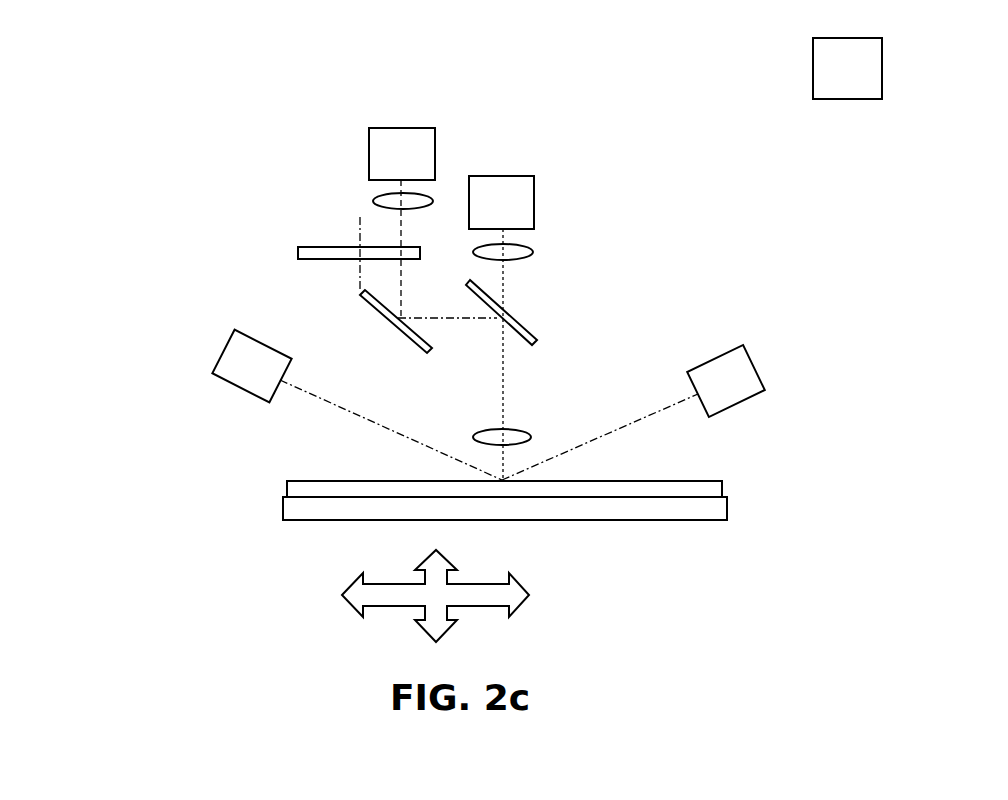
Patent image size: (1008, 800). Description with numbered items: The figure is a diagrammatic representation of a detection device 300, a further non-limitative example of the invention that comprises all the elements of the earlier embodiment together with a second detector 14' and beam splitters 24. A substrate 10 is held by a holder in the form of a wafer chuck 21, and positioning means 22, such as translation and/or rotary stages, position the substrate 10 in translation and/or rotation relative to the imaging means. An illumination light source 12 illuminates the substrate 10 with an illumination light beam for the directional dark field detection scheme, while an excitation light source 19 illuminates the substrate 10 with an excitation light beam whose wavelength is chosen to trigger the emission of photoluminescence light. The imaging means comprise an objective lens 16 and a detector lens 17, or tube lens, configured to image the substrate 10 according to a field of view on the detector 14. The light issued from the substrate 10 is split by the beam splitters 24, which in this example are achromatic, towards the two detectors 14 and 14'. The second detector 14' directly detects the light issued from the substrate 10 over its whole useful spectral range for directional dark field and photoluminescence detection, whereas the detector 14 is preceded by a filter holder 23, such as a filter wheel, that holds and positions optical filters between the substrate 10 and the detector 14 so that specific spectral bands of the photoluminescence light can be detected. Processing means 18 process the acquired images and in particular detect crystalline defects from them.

The device 300 is at (80, 118).
The detector 14 is at (402, 195).
The second detector 14' is at (556, 323).
The detector lens 17 is at (374, 200).
The filter holder 23 is at (297, 251).
The beam splitters 24 is at (380, 312).
The illumination light source 12 is at (225, 353).
The excitation light source 19 is at (757, 370).
The objective lens 16 is at (532, 437).
The substrate 10 is at (287, 488).
The wafer chuck 21 is at (505, 521).
The positioning means 22 is at (342, 595).
The processing means 18 is at (813, 64).